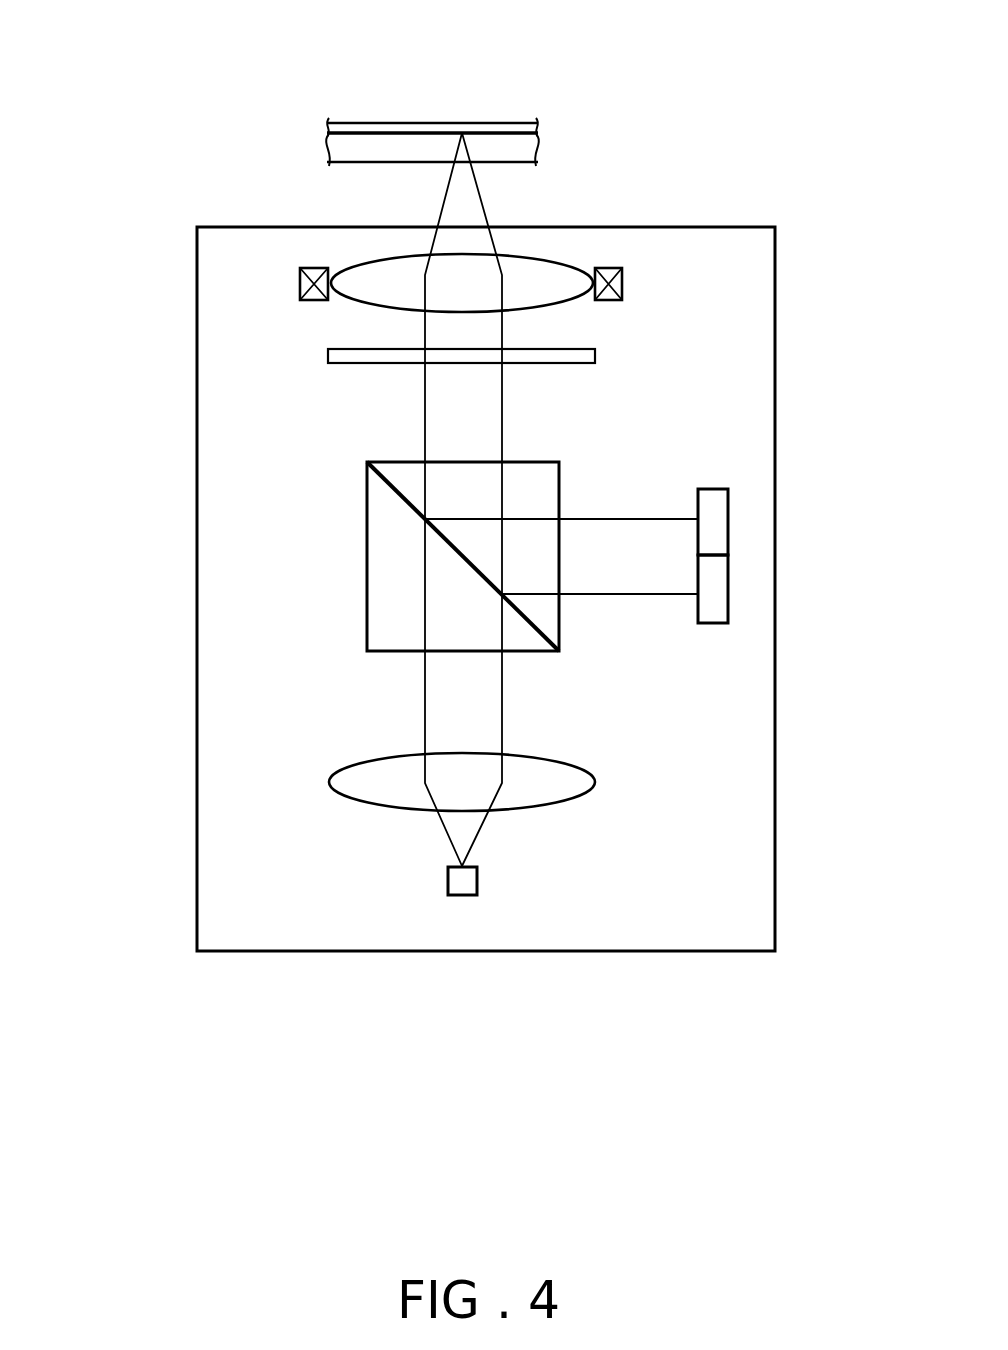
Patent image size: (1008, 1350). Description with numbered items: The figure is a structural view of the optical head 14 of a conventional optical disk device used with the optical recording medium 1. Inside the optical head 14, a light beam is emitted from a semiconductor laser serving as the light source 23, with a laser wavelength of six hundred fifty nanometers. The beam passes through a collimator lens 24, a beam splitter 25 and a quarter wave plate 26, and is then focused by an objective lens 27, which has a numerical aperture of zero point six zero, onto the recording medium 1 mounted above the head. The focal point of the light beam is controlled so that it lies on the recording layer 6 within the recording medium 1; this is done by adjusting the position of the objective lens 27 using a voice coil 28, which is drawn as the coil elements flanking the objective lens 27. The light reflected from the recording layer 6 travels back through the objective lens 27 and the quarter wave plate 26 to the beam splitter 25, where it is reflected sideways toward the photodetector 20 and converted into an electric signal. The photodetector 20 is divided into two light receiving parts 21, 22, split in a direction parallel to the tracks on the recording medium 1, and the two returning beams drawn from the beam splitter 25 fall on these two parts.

The recording medium 1 is at (493, 115).
The recording layer 6 is at (385, 134).
The optical head 14 is at (127, 313).
The photodetector 20 is at (780, 602).
The light receiving part 21 is at (728, 510).
The light receiving part 22 is at (728, 583).
The light source 23 is at (462, 897).
The collimator lens 24 is at (596, 780).
The beam splitter 25 is at (559, 485).
The 1/4 wave plate 26 is at (595, 352).
The objective lens 27 is at (547, 262).
The voice coil 28 is at (613, 270).